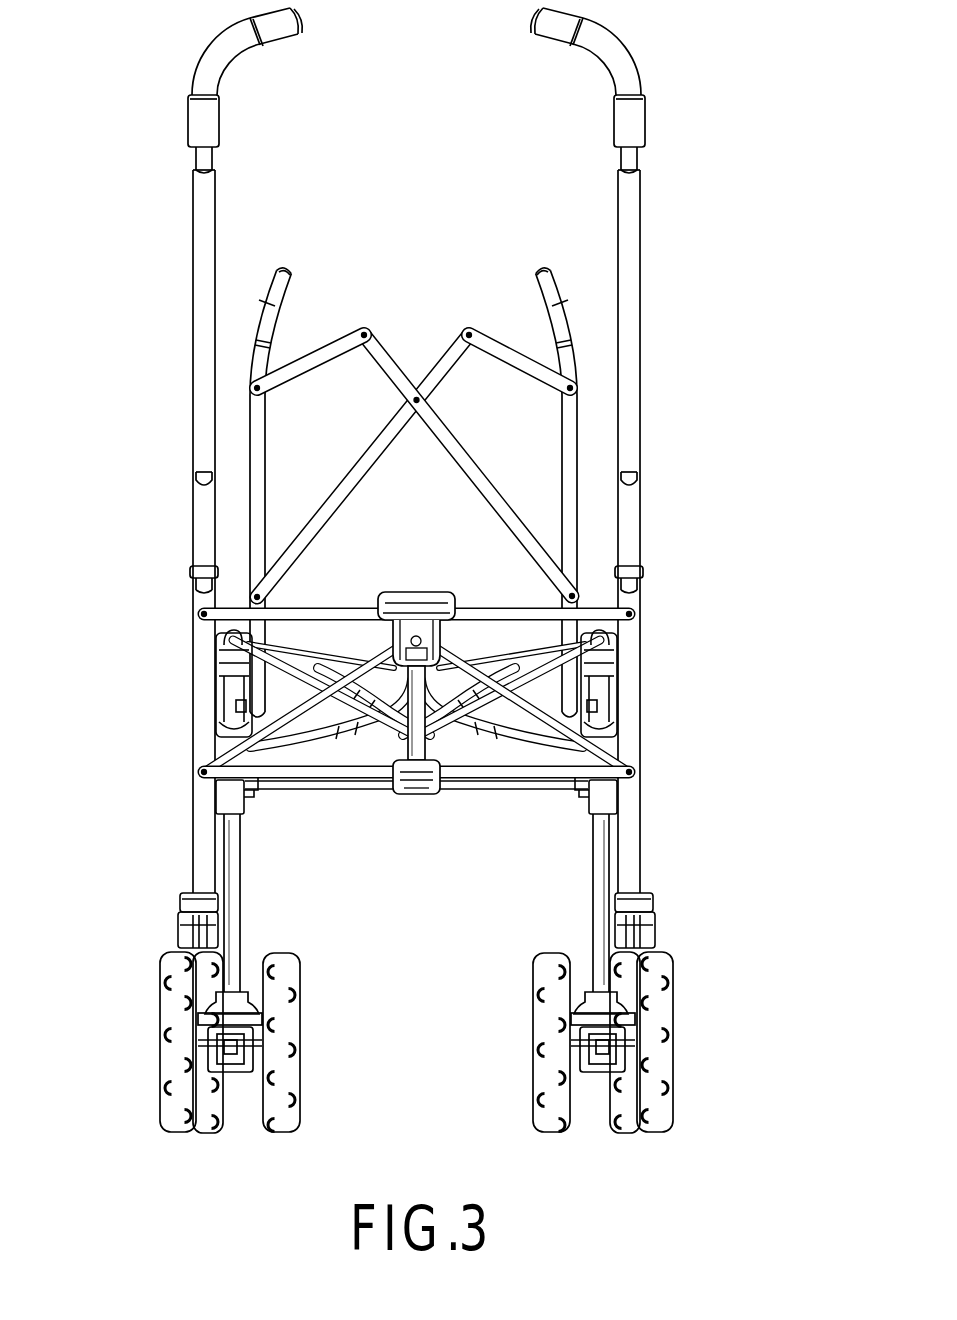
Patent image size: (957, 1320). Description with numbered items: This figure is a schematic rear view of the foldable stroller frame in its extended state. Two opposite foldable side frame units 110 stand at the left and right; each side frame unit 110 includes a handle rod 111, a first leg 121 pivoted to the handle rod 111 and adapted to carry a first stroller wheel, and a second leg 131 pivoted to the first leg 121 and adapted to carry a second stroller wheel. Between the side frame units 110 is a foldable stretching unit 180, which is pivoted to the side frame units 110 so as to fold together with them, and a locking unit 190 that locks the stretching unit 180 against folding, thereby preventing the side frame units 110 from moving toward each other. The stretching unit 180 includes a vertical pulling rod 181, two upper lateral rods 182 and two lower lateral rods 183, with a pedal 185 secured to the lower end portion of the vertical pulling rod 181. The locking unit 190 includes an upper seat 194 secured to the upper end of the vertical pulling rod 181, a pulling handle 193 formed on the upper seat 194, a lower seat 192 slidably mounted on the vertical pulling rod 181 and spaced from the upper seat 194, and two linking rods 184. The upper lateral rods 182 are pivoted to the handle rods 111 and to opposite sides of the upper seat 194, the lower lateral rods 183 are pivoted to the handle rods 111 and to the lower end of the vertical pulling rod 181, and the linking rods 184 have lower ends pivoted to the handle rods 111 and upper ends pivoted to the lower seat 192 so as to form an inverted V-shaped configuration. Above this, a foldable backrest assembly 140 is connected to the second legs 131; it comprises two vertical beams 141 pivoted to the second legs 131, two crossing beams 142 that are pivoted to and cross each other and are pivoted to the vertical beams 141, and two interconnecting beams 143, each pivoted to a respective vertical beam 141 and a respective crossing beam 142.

The foldable side frame unit 110 is at (178, 560).
The handle rod 111 is at (203, 637).
The first leg 121 is at (202, 875).
The second leg 131 is at (228, 929).
The foldable backrest assembly 140 is at (421, 473).
The vertical beam 141 is at (257, 413).
The crossing beam 142 is at (353, 472).
The interconnecting beam 143 is at (307, 360).
The foldable stretching unit 180 is at (439, 833).
The vertical pulling rod 181 is at (365, 745).
The upper lateral rod 182 is at (240, 611).
The lower lateral rod 183 is at (283, 772).
The linking rod 184 is at (230, 760).
The pedal 185 is at (415, 795).
The locking unit 190 is at (456, 634).
The lower seat 192 is at (440, 658).
The pulling handle 193 is at (402, 598).
The upper seat 194 is at (437, 636).